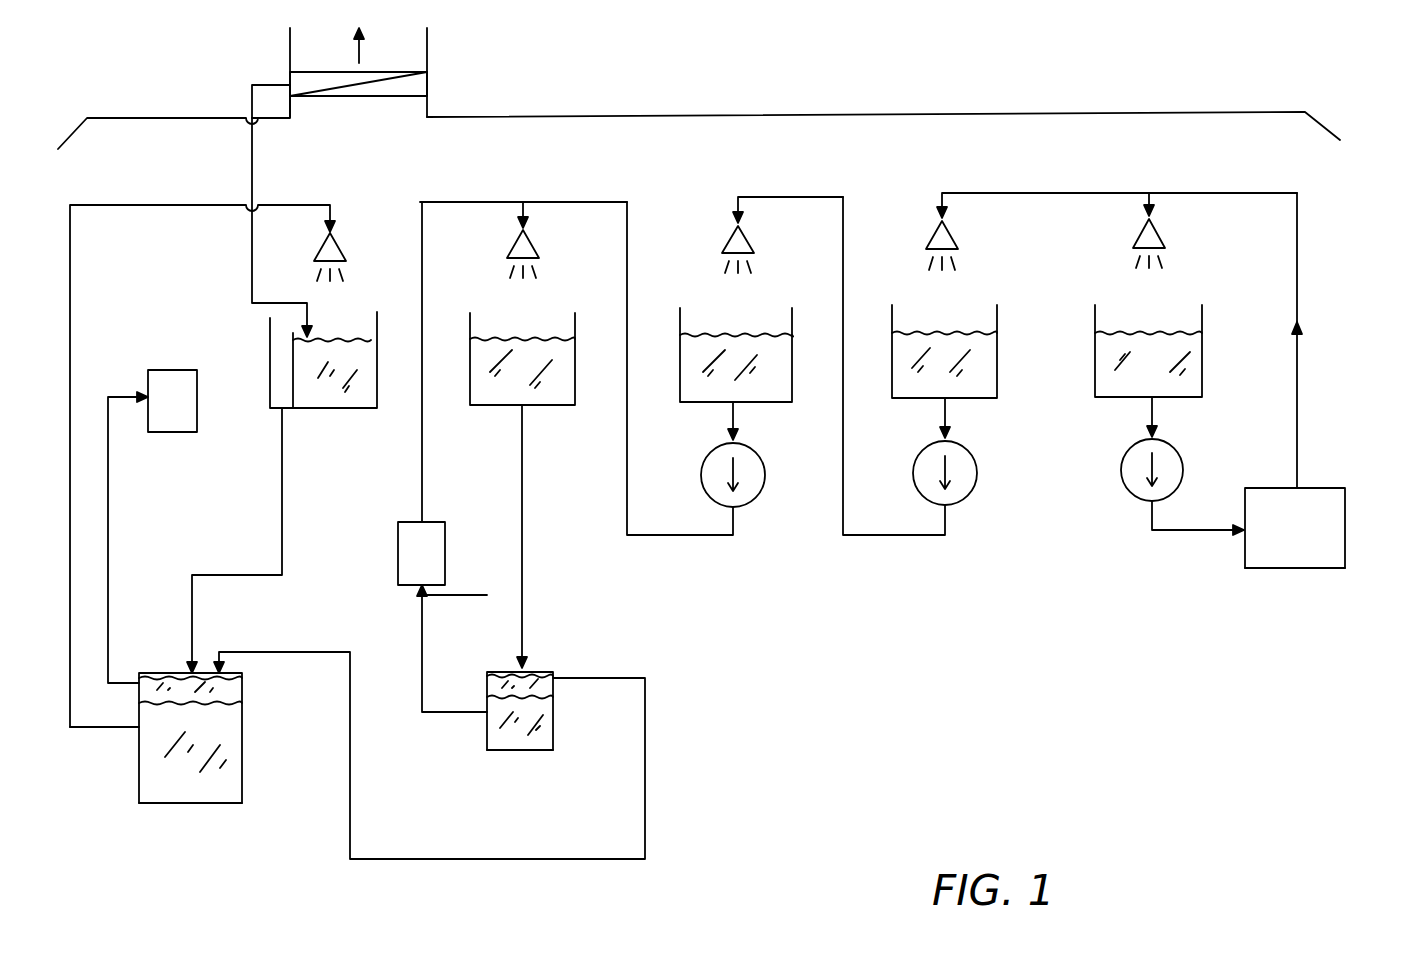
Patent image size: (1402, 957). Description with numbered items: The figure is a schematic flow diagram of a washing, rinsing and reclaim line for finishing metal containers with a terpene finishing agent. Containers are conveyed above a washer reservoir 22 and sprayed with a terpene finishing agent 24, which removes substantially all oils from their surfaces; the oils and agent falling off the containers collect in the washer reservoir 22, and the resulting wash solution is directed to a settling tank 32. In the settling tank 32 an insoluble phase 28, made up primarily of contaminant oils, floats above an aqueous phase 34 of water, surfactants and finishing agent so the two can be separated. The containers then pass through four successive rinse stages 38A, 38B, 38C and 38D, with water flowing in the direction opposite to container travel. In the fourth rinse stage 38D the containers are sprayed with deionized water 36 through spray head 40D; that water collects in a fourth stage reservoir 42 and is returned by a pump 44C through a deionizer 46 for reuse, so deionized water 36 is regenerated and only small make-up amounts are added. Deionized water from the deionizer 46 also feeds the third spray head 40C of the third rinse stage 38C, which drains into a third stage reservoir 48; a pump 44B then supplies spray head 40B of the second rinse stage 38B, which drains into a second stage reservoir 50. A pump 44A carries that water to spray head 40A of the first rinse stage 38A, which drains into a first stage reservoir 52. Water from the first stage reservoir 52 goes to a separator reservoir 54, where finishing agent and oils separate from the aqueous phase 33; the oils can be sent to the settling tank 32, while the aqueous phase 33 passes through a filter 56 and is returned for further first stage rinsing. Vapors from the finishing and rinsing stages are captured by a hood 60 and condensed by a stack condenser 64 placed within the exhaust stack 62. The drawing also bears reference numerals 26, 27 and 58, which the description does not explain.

The washer reservoir 22 is at (378, 378).
The terpene finishing agent 24 is at (352, 273).
The partition wall 26 is at (295, 378).
The liquid layer 27 is at (543, 670).
The insoluble phase 28 is at (233, 690).
The settling tank 32 is at (244, 750).
The aqueous phase 33 is at (505, 738).
The aqueous phase 34 is at (222, 787).
The deionized water 36 is at (1266, 558).
The first rinse stage 38A is at (530, 187).
The second rinse stage 38B is at (783, 183).
The third rinse stage 38C is at (947, 177).
The fourth rinse stage 38D is at (1162, 173).
The spray head 40A is at (541, 241).
The spray head 40B is at (757, 239).
The third spray head 40C is at (960, 235).
The spray head 40D is at (1166, 234).
The fourth stage reservoir 42 is at (1203, 365).
The pump 44A is at (766, 469).
The pump 44B is at (978, 468).
The pump 44C is at (1184, 467).
The deionizer 46 is at (1347, 538).
The third stage reservoir 48 is at (998, 368).
The second stage reservoir 50 is at (793, 378).
The first stage reservoir 52 is at (576, 378).
The separator reservoir 54 is at (555, 726).
The filter 56 is at (447, 546).
The pump 58 is at (199, 394).
The hood 60 is at (745, 112).
The exhaust stack 62 is at (432, 108).
The stack condenser 64 is at (296, 78).